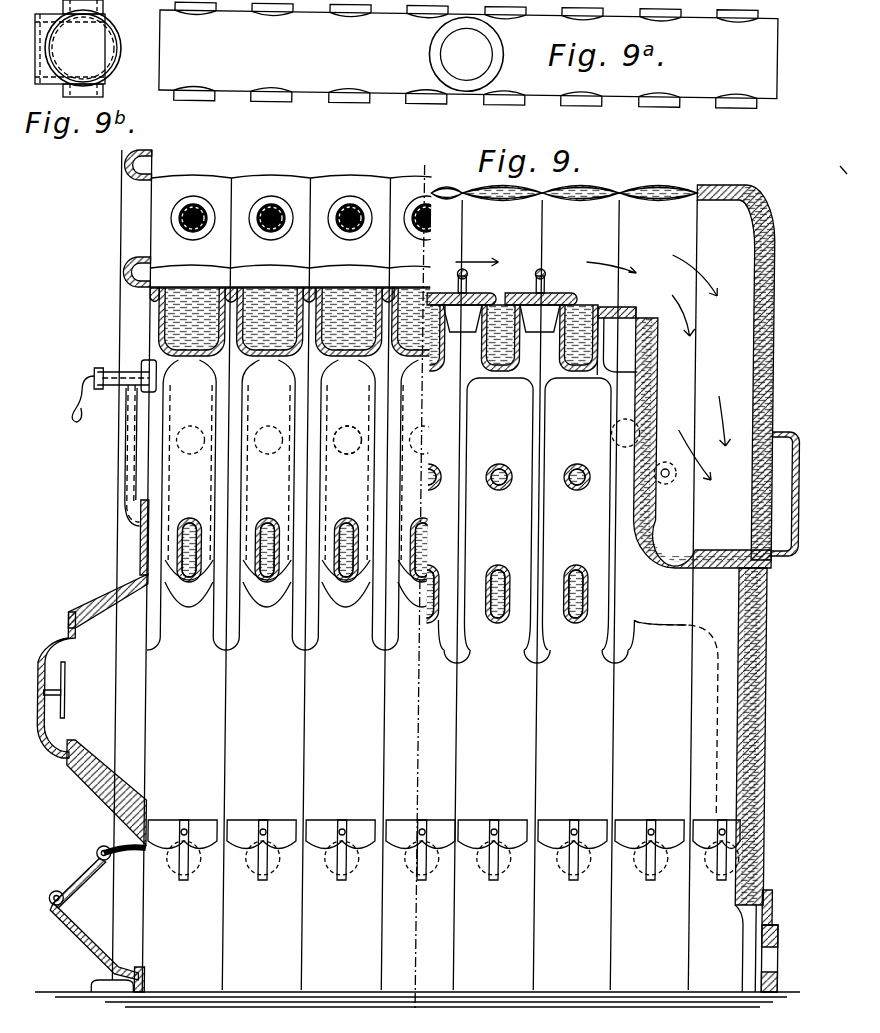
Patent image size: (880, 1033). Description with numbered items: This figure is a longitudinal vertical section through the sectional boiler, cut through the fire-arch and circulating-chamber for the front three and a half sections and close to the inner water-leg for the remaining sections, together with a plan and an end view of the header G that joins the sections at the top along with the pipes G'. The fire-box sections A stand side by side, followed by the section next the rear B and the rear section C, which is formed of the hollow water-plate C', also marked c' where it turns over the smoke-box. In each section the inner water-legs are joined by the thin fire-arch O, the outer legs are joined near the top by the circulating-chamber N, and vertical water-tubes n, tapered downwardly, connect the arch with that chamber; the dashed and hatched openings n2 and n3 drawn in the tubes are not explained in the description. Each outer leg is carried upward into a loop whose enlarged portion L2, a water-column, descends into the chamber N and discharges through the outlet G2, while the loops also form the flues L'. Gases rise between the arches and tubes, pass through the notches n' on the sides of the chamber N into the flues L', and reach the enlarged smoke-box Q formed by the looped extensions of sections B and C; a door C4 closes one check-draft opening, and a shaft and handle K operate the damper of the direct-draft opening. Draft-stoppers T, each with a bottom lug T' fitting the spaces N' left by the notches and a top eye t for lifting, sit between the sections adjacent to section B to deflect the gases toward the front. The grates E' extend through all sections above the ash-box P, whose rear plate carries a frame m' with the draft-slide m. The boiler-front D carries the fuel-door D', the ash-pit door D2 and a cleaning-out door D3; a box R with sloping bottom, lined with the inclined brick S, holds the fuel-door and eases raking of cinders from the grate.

In FIG. 9B, the header G is at (86, 48).
In FIG. 9A, the header G is at (468, 68).
In FIG. 9, the outlet G2 is at (196, 200).
In FIG. 9, the enlarged portion of the loop L2 is at (272, 200).
In FIG. 9, the pipes G' is at (350, 191).
In FIG. 9, the circulating-chamber N is at (338, 328).
In FIG. 9, the dashed opening n2 is at (346, 410).
In FIG. 9, the opening n3 is at (348, 428).
In FIG. 9, the vertical water-tubes n is at (399, 520).
In FIG. 9, the fire-arch O is at (272, 518).
In FIG. 9, the cleaning-out door D3 is at (123, 447).
In FIG. 9, the boiler-front D is at (114, 537).
In FIG. 9, the box R is at (114, 595).
In FIG. 9, the fuel-door D' is at (44, 685).
In FIG. 9, the brick S is at (100, 768).
In FIG. 9, the ash-pit door D2 is at (93, 875).
In FIG. 9, the ash-box P is at (417, 913).
In FIG. 9, the grates E' is at (444, 811).
In FIG. 9, the flues L' is at (564, 215).
In FIG. 9, the eye t is at (540, 272).
In FIG. 9, the lug T' is at (504, 284).
In FIG. 9, the spaces N' is at (462, 334).
In FIG. 9, the draft-stopper T is at (539, 334).
In FIG. 9, the notches n' is at (617, 341).
In FIG. 9, the smoke-box Q is at (593, 367).
In FIG. 9, the hollow water-plate c' is at (734, 372).
In FIG. 9, the section next the rear B is at (661, 402).
In FIG. 9, the door C4 is at (799, 442).
In FIG. 9, the shaft and handle K is at (671, 480).
In FIG. 9, the fire-box sections A is at (393, 595).
In FIG. 9, the rear section C is at (677, 717).
In FIG. 9, the hollow water-plate C' is at (748, 596).
In FIG. 9, the frame m' is at (789, 904).
In FIG. 9, the draft-slide m is at (785, 957).